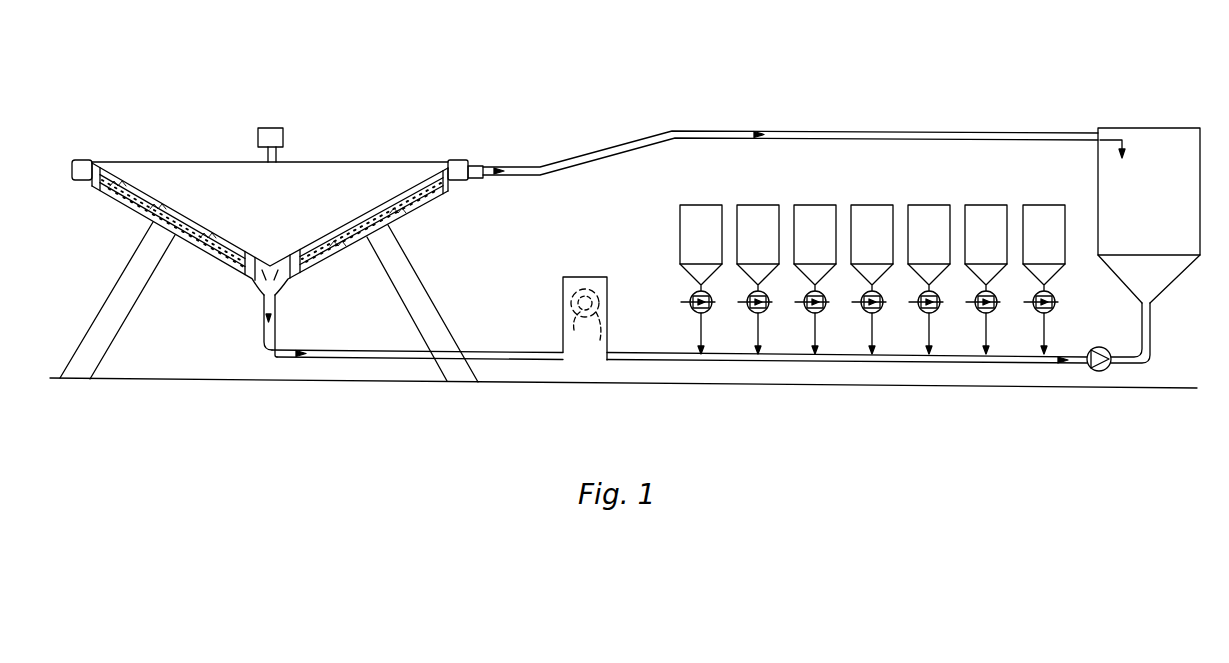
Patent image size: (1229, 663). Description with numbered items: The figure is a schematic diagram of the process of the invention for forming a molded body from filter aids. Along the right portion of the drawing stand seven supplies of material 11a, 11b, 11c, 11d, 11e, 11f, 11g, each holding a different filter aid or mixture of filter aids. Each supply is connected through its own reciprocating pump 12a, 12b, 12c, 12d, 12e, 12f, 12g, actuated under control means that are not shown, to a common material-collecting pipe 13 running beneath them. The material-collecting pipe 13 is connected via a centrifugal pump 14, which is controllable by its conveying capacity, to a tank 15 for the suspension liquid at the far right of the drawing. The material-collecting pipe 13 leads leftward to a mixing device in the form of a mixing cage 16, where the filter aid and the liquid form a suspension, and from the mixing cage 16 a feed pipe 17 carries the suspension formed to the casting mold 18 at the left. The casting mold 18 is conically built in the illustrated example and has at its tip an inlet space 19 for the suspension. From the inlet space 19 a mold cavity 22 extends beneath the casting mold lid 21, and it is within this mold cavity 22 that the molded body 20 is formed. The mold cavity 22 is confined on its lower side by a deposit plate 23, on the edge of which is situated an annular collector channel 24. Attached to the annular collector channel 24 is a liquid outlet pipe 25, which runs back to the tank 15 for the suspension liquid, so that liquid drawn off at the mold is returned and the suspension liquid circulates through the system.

The supply of material 11a is at (715, 249).
The supply of material 11b is at (772, 249).
The supply of material 11c is at (829, 249).
The supply of material 11d is at (886, 249).
The supply of material 11e is at (943, 249).
The supply of material 11f is at (1000, 249).
The supply of material 11g is at (1058, 249).
The reciprocating pump 12a is at (693, 309).
The reciprocating pump 12b is at (750, 309).
The reciprocating pump 12c is at (807, 309).
The reciprocating pump 12d is at (864, 309).
The reciprocating pump 12e is at (921, 309).
The reciprocating pump 12f is at (978, 309).
The reciprocating pump 12g is at (1036, 309).
The material-collecting pipe 13 is at (845, 358).
The centrifugal pump 14 is at (1102, 368).
The tank 15 is at (1148, 168).
The mixing cage 16 is at (587, 338).
The feed pipe 17 is at (377, 354).
The casting mold 18 is at (298, 156).
The inlet space 19 is at (260, 282).
The molded body 20 is at (152, 220).
The casting mold lid 21 is at (180, 178).
The mold cavity 22 is at (210, 232).
The deposit plate 23 is at (138, 212).
The annular collector channel 24 is at (82, 163).
The liquid outlet pipe 25 is at (697, 136).